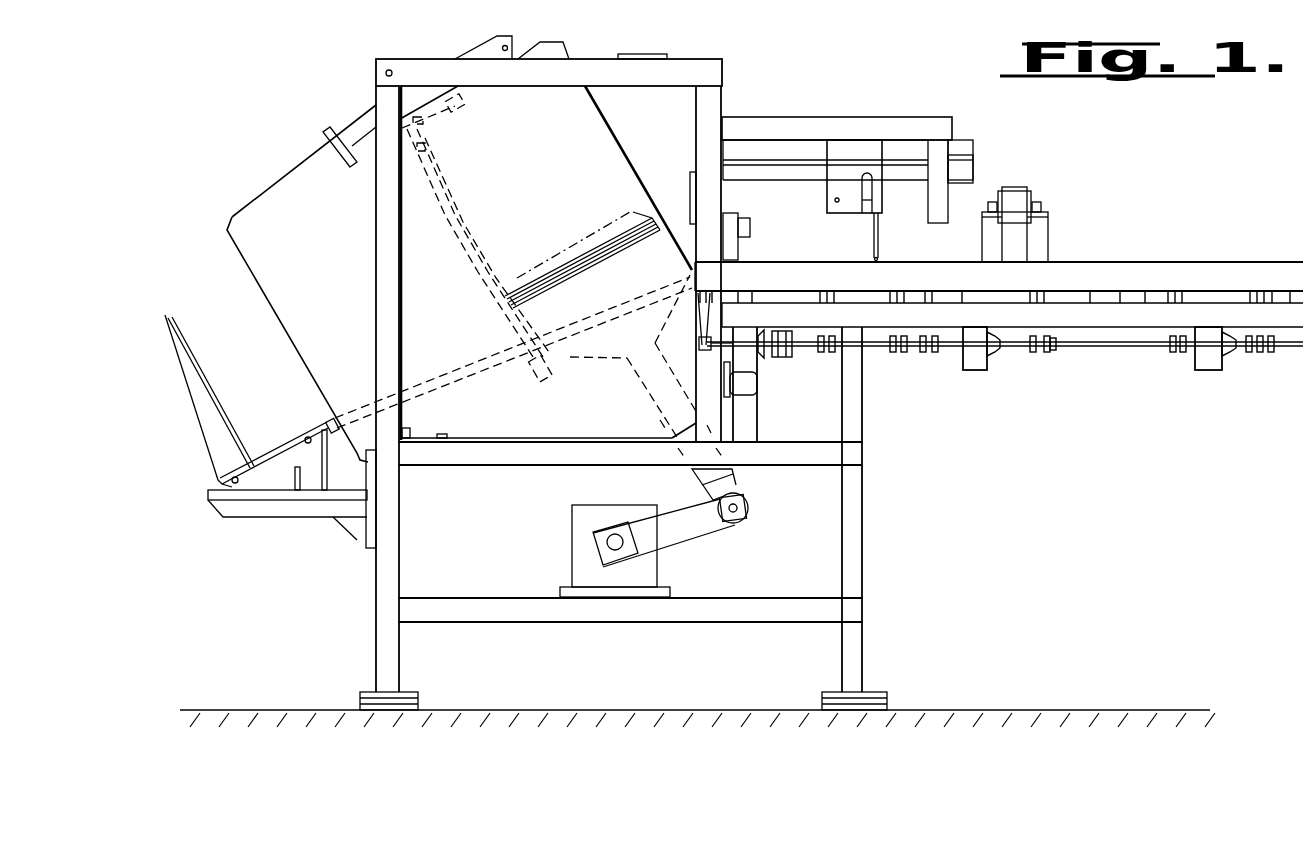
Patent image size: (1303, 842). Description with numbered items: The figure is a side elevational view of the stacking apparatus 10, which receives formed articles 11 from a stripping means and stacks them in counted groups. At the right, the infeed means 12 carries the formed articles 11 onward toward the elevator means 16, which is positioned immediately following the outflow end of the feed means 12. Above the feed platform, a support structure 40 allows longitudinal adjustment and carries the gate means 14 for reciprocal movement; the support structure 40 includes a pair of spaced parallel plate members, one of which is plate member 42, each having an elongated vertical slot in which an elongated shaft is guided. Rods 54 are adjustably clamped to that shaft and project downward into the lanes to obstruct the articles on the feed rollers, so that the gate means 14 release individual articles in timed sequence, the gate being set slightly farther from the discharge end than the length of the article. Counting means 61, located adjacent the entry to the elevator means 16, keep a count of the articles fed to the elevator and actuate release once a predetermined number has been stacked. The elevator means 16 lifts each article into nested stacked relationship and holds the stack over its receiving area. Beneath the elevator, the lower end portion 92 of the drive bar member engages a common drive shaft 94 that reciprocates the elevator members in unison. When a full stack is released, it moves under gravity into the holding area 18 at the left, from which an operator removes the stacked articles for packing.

The stacking apparatus 10 is at (1101, 181).
The formed articles 11 is at (537, 268).
The infeed means 12 is at (1165, 256).
The gate means 14 is at (880, 193).
The elevator means 16 is at (636, 150).
The holding area 18 is at (288, 406).
The support structure 40 is at (952, 122).
The plate member 42 is at (848, 202).
The rods 54 is at (880, 257).
The counting means 61 is at (750, 226).
The lower end portion 92 is at (742, 483).
The drive shaft 94 is at (745, 511).